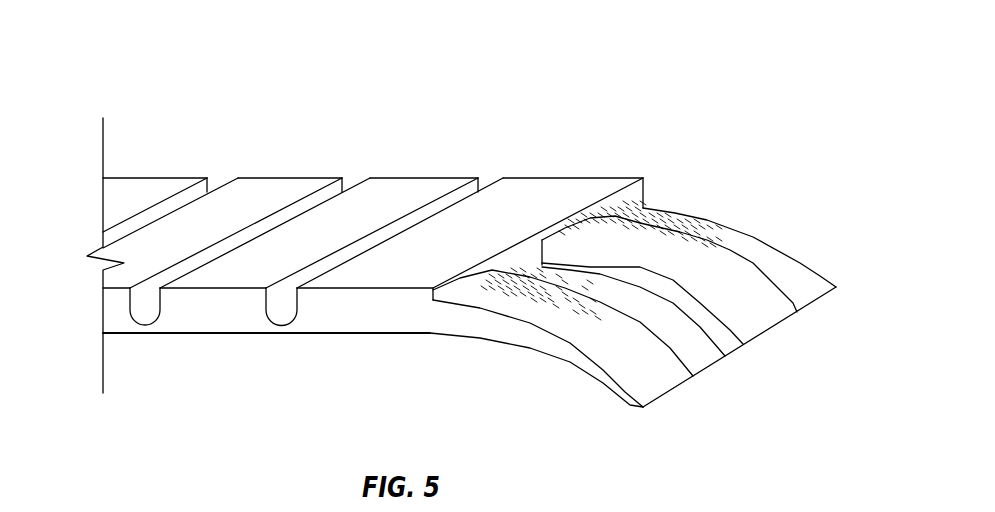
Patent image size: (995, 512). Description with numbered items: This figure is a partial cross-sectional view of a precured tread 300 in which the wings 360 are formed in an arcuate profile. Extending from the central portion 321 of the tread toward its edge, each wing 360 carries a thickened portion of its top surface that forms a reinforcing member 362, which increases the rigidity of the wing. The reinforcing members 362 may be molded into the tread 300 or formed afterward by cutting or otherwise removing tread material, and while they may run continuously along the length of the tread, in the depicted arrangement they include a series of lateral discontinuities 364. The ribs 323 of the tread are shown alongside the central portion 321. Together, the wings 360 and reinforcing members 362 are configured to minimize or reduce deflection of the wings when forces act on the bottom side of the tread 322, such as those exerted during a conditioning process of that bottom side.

The tread 300 is at (124, 47).
The central portion 321 is at (444, 135).
The bottom side of the tread 322 is at (307, 334).
The ribs 323 is at (266, 186).
The wings 360 is at (753, 238).
The reinforcing member 362 is at (755, 322).
The lateral discontinuities 364 is at (808, 292).